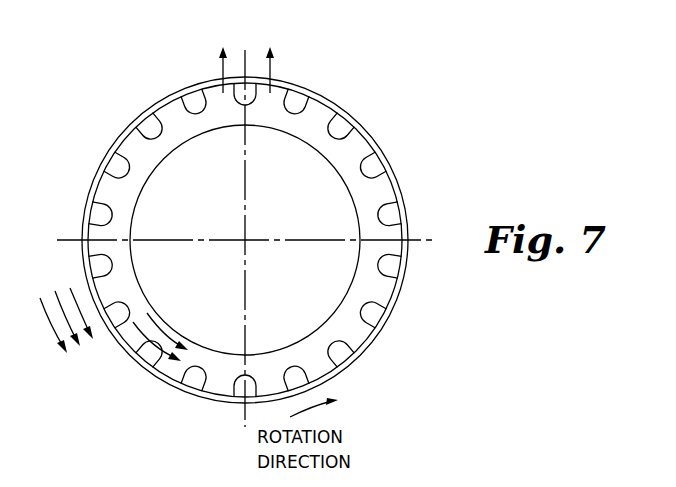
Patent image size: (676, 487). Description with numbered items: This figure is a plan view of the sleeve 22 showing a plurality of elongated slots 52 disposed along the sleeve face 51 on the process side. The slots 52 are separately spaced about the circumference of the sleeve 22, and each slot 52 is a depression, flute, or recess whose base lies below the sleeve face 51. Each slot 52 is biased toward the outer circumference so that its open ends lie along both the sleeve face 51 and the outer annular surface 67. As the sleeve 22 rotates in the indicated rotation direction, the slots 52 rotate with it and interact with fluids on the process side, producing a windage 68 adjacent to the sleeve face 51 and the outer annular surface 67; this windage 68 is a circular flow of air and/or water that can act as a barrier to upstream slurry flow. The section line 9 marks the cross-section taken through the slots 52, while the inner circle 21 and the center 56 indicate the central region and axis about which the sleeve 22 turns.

The section line 9- 9 is at (248, 62).
The rotor 21 is at (211, 218).
The sleeve 22 is at (412, 172).
The sleeve face 51 is at (378, 283).
The slots 52 is at (335, 58).
The axis of rotation 56 is at (247, 240).
The outer annular surface 67 is at (92, 183).
The windage 68 is at (107, 324).